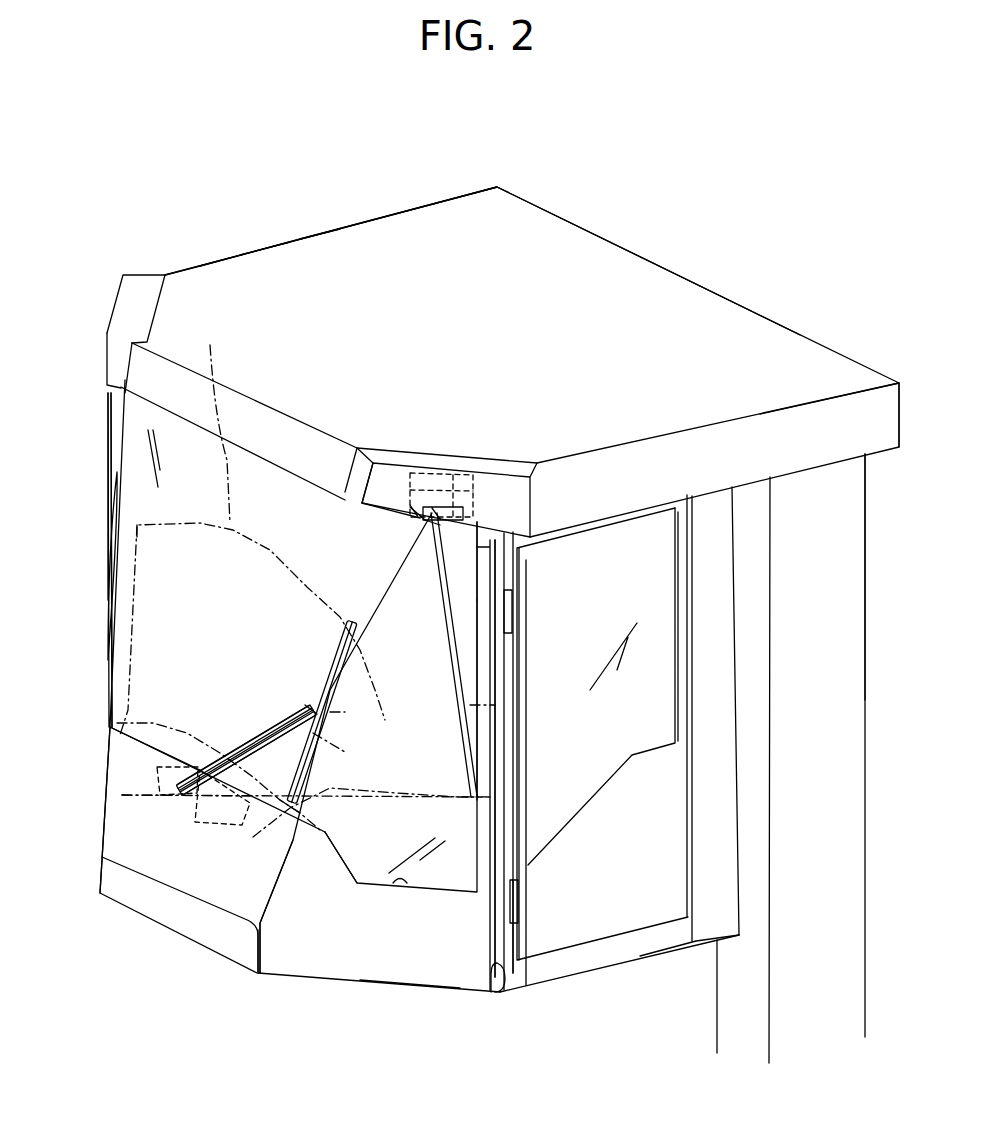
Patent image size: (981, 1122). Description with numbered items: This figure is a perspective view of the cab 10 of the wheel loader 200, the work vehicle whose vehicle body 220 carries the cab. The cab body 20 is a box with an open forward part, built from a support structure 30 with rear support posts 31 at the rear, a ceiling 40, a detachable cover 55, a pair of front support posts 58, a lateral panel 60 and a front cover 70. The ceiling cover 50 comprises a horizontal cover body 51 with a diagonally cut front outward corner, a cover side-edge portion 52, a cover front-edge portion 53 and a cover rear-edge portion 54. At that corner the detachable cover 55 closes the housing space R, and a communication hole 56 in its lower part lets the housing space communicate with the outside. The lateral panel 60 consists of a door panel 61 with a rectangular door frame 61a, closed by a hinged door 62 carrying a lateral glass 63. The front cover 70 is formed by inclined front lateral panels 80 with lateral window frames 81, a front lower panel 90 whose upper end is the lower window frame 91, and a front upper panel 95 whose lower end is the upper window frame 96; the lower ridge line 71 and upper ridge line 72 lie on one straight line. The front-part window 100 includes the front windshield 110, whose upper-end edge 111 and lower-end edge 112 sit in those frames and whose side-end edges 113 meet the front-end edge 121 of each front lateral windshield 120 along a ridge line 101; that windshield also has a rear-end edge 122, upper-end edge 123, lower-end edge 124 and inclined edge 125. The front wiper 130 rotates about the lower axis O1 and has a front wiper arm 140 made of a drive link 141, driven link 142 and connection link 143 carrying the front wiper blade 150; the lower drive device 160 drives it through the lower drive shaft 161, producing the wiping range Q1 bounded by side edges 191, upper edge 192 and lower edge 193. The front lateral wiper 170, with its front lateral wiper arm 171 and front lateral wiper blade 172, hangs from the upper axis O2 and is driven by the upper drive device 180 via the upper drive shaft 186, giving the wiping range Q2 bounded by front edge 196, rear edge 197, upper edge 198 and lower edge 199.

The cab 10 is at (206, 214).
The cab body 20 is at (262, 243).
The support structure 30 is at (868, 566).
The rear support post 31 is at (855, 487).
The ceiling 40 is at (762, 308).
The ceiling cover 50 is at (600, 283).
The cover body 51 is at (648, 300).
The cover side-edge portion 52 is at (893, 405).
The cover front-edge portion 53 is at (137, 377).
The cover rear-edge portion 54 is at (815, 345).
The detachable cover 55 is at (142, 290).
The communication hole 56 is at (450, 517).
The front support post 58 is at (498, 987).
The lateral panel 60 is at (745, 820).
The door panel 61 is at (720, 568).
The door frame 61a is at (687, 608).
The door 62 is at (659, 891).
The lateral glass 63 is at (668, 520).
The front cover 70 is at (100, 879).
The lower ridge line 71 is at (100, 838).
The upper ridge line 72 is at (412, 508).
The front lateral panel 80 is at (440, 975).
The lateral window frame 81 is at (400, 887).
The front lower panel 90 is at (131, 886).
The lower window frame 91 is at (112, 724).
The front upper panel 95 is at (427, 518).
The upper window frame 96 is at (420, 530).
The front-part window 100 is at (105, 673).
The ridge line 101 is at (111, 652).
The front windshield 110 is at (247, 453).
The upper-end edge 111 is at (400, 517).
The lower-end edge 112 is at (302, 806).
The side-end edge 113 is at (109, 688).
The front lateral windshield 120 is at (372, 885).
The front-end edge 121 is at (345, 748).
The rear-end edge 122 is at (478, 650).
The upper-end edge 123 is at (477, 541).
The lower-end edge 124 is at (440, 897).
The inclined edge 125 is at (344, 870).
The front wiper 130 is at (258, 722).
The front wiper arm 140 is at (285, 748).
The drive link 141 is at (250, 737).
The driven link 142 is at (272, 742).
The connection link 143 is at (282, 746).
The front wiper blade 150 is at (346, 626).
The lower drive device 160 is at (205, 800).
The lower drive shaft 161 is at (190, 790).
The front lateral wiper 170 is at (104, 430).
The front lateral wiper arm 171 is at (110, 405).
The front lateral wiper blade 172 is at (114, 492).
The upper drive device 180 is at (435, 473).
The upper drive shaft 186 is at (426, 506).
The side edge 191 is at (136, 555).
The upper edge 192 is at (208, 421).
The lower edge 193 is at (128, 735).
The front edge 196 is at (345, 712).
The rear edge 197 is at (470, 707).
The upper edge 198 is at (443, 610).
The lower edge 199 is at (400, 800).
The wheel loader 200 is at (268, 150).
The vehicle body 220 is at (323, 177).
The lower axis O1 is at (122, 795).
The upper axis O2 is at (482, 470).
The wiping range Q1 is at (193, 520).
The wiping range Q2 is at (487, 800).
The housing space R is at (498, 488).